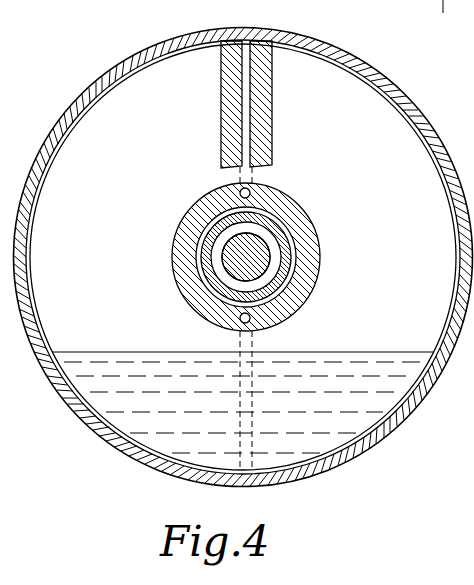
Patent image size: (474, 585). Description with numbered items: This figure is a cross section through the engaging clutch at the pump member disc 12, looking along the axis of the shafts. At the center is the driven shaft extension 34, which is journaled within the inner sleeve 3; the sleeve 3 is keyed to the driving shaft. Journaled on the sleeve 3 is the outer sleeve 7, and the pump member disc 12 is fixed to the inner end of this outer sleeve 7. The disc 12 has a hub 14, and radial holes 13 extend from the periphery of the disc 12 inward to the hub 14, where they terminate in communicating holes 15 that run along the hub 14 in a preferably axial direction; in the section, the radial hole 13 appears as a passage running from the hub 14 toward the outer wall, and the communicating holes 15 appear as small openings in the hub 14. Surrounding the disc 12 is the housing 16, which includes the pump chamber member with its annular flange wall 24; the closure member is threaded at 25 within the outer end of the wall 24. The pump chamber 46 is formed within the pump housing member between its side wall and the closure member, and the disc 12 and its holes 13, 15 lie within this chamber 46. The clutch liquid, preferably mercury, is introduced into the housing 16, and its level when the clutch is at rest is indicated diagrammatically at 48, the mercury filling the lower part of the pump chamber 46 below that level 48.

The sleeve 3 is at (278, 250).
The outer sleeve 7 is at (278, 223).
The pump member disc 12 is at (243, 257).
The radial holes 13 is at (252, 115).
The hub 14 is at (273, 195).
The communicating holes 15 is at (240, 193).
The housing 16 is at (287, 33).
The annular flange wall 24 is at (325, 46).
The threaded connection 25 is at (451, 18).
The driven shaft extension 34 is at (257, 265).
The pump chamber 46 is at (372, 72).
The mercury level 48 is at (378, 352).